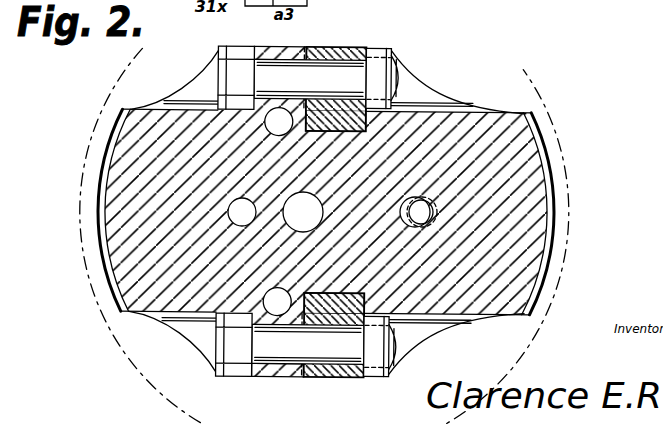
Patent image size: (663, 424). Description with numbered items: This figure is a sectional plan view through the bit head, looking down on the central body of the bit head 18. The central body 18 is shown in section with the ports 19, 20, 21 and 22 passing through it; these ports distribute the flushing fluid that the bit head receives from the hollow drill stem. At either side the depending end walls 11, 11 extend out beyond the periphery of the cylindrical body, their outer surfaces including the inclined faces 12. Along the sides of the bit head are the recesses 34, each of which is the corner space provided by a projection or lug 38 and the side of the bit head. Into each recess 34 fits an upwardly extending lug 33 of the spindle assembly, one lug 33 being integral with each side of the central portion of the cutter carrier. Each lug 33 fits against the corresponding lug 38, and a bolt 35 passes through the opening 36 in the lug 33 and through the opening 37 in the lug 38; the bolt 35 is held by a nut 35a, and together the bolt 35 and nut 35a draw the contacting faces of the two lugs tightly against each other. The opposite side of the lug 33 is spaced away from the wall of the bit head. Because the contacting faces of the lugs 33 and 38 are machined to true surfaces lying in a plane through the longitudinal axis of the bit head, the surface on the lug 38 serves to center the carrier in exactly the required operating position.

The end walls 11 is at (122, 181).
The inclined faces 12 is at (101, 229).
The central body of the bit head 18 is at (330, 212).
The port 19 is at (310, 219).
The port 20 is at (277, 123).
The port 21 is at (239, 216).
The port 22 is at (418, 217).
The lug 33 is at (343, 48).
The recess 34 is at (333, 129).
The bolt 35 is at (272, 78).
The nut 35a is at (388, 83).
The opening 36 is at (388, 53).
The opening 37 is at (273, 57).
The lug 38 is at (287, 52).